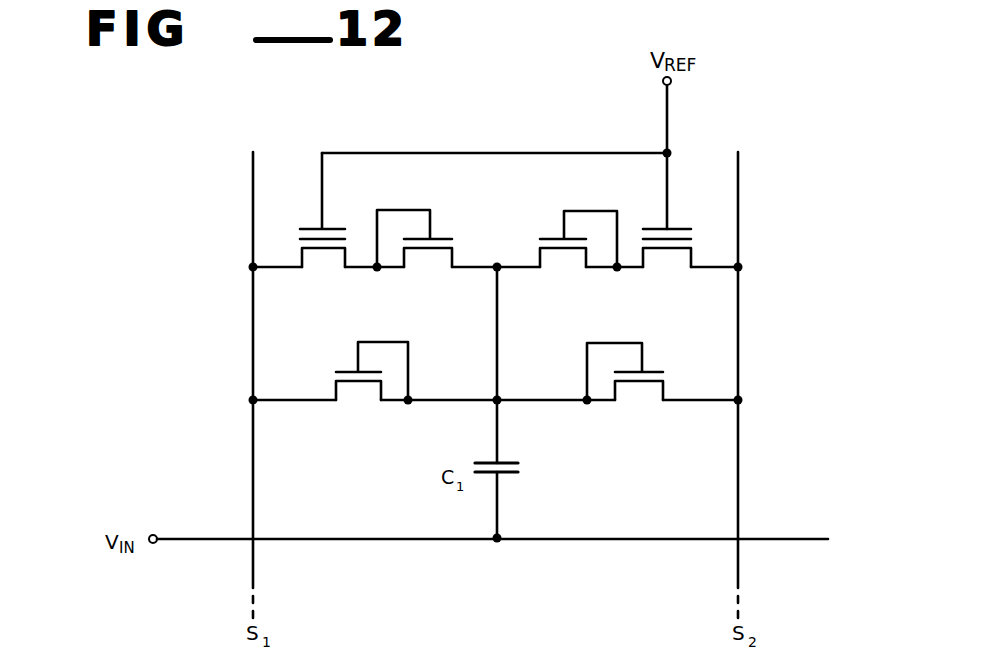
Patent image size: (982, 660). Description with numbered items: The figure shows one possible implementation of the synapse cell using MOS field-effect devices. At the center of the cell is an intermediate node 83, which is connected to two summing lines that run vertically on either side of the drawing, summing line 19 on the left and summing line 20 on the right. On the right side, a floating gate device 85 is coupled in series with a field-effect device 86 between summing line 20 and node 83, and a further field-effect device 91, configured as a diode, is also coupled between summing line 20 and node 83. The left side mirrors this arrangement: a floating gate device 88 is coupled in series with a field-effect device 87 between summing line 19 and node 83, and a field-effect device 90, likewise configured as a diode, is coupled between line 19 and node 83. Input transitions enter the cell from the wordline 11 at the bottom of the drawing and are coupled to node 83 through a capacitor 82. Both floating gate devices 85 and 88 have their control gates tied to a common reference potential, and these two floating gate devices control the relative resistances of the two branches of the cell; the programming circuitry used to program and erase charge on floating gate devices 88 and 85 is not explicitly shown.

The wordline 11 is at (777, 537).
The summing line 19 is at (252, 266).
The summing line 20 is at (742, 264).
The capacitor 82 is at (523, 471).
The intermediate node 83 is at (500, 397).
The floating gate device 85 is at (662, 260).
The field-effect device 86 is at (562, 260).
The field-effect device 87 is at (432, 258).
The floating gate device 88 is at (329, 257).
The field-effect device 90 is at (361, 392).
The field-effect device 91 is at (638, 392).